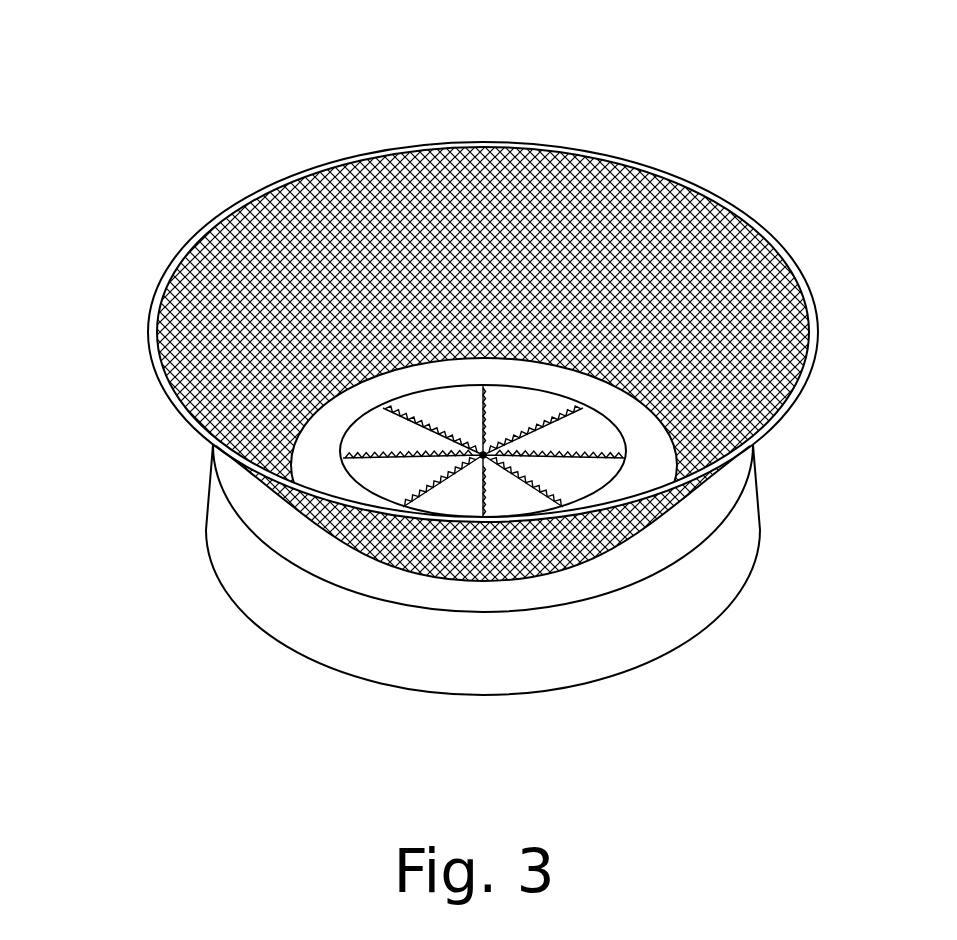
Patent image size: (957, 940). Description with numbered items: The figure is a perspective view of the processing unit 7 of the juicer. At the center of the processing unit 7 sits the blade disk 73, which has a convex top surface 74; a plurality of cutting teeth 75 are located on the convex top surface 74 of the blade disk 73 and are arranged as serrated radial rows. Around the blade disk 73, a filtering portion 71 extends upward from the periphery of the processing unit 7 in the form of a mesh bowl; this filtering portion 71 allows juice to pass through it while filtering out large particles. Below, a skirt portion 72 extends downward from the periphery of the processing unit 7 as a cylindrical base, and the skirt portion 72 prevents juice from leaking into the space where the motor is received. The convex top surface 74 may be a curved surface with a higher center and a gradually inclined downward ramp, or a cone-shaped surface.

The processing unit 7 is at (256, 100).
The filtering portion 71 is at (710, 230).
The skirt portion 72 is at (247, 568).
The blade disk 73 is at (647, 430).
The convex top surface 74 is at (378, 443).
The cutting teeth 75 is at (423, 427).